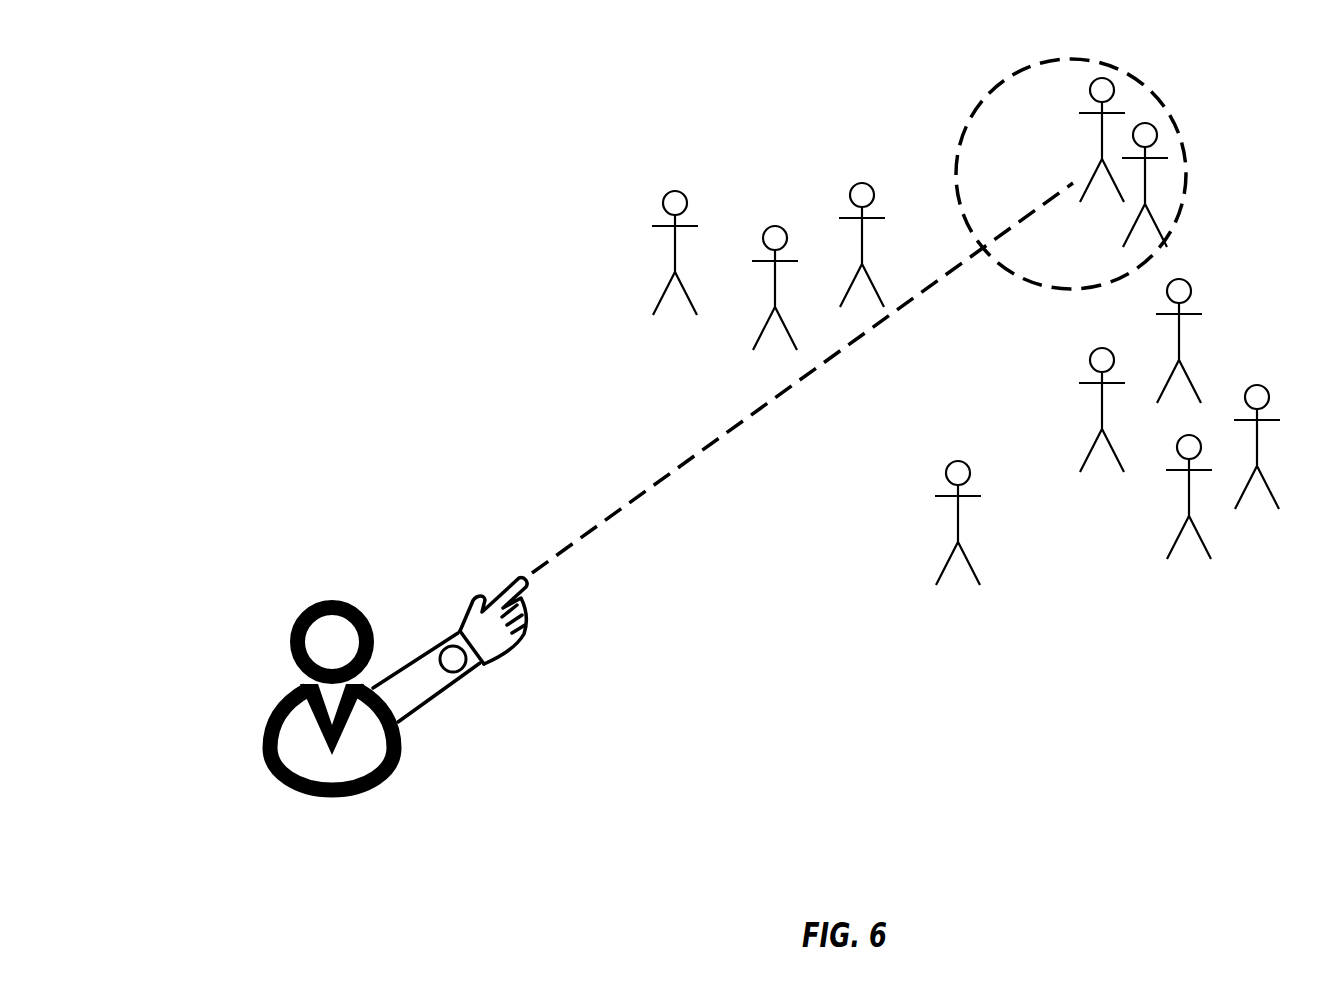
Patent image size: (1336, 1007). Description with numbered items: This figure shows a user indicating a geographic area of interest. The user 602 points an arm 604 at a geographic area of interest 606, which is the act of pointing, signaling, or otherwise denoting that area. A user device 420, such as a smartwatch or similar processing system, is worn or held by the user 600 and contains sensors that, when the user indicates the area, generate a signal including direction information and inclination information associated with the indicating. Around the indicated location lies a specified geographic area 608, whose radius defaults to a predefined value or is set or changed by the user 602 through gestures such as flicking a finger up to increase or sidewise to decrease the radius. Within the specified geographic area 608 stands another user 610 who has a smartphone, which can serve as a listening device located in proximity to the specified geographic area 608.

The user 600 is at (238, 80).
The user 602 is at (316, 603).
The arm 604 is at (483, 597).
The user device 420 is at (440, 651).
The geographic area of interest 606 is at (1061, 172).
The specified geographic area 608 is at (987, 100).
The user 610 is at (1100, 147).